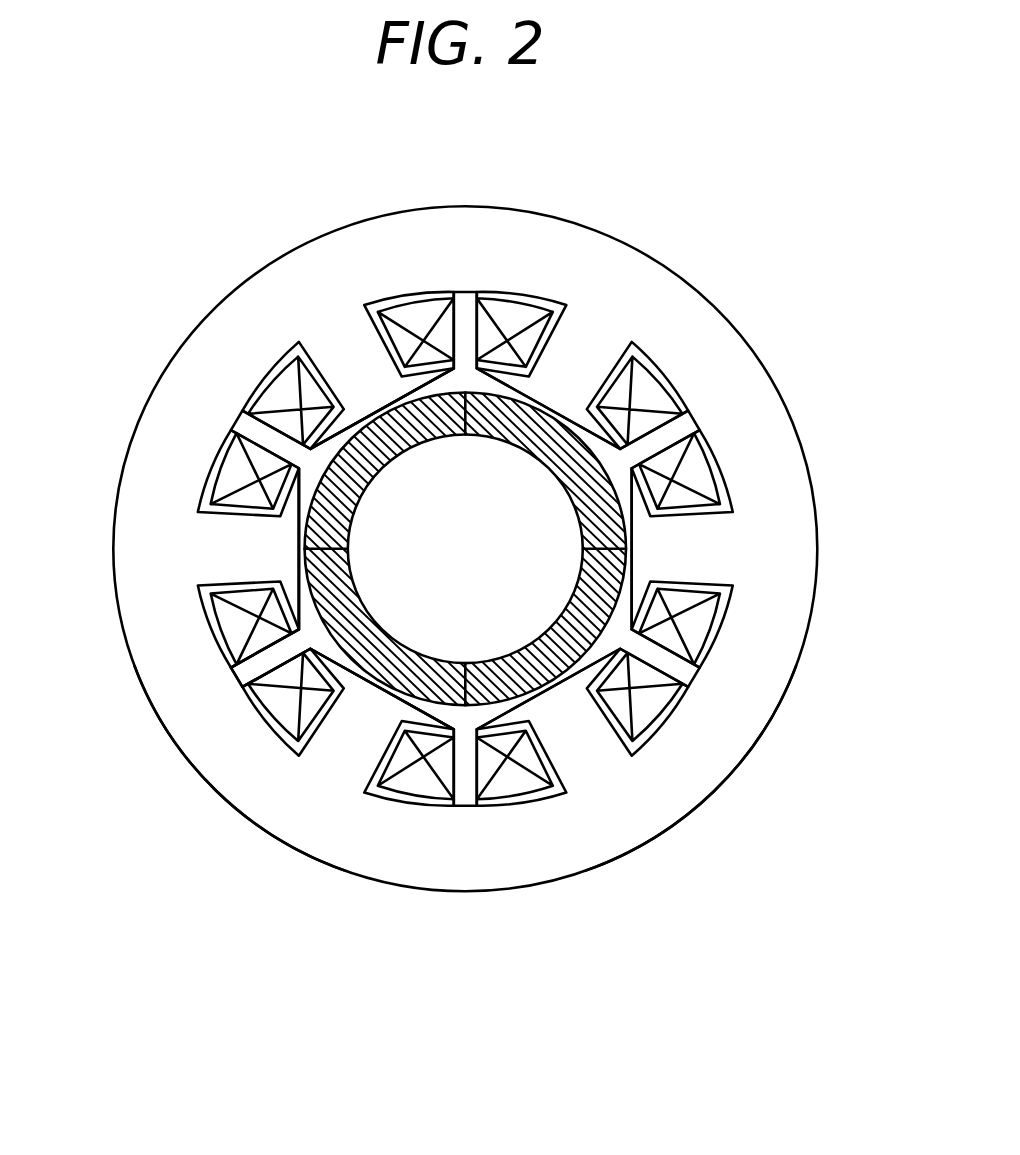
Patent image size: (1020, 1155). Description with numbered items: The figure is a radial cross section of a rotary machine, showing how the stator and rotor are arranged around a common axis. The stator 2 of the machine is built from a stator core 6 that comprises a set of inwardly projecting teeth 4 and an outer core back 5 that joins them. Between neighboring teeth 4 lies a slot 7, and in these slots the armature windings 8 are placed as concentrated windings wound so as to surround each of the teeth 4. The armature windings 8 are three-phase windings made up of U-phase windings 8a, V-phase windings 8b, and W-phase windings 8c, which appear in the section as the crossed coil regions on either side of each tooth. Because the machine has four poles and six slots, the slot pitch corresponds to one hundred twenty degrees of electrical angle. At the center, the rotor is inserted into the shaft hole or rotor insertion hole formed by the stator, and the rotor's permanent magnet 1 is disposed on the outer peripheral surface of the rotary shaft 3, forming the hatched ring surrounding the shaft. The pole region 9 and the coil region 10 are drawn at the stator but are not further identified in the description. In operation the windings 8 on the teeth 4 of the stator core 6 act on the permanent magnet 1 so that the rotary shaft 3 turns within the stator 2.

The permanent magnet 1 is at (306, 542).
The stator 2 is at (818, 491).
The rotary shaft 3 is at (510, 490).
The teeth 4 is at (578, 327).
The core back 5 is at (660, 812).
The stator core 6 is at (308, 830).
The slot 7 is at (250, 665).
The armature windings 8 is at (876, 703).
The U-phase windings 8a is at (232, 483).
The V-phase windings 8b is at (653, 400).
The W-phase windings 8c is at (417, 317).
The pole shoe 9 is at (377, 415).
The coil 10 is at (320, 422).